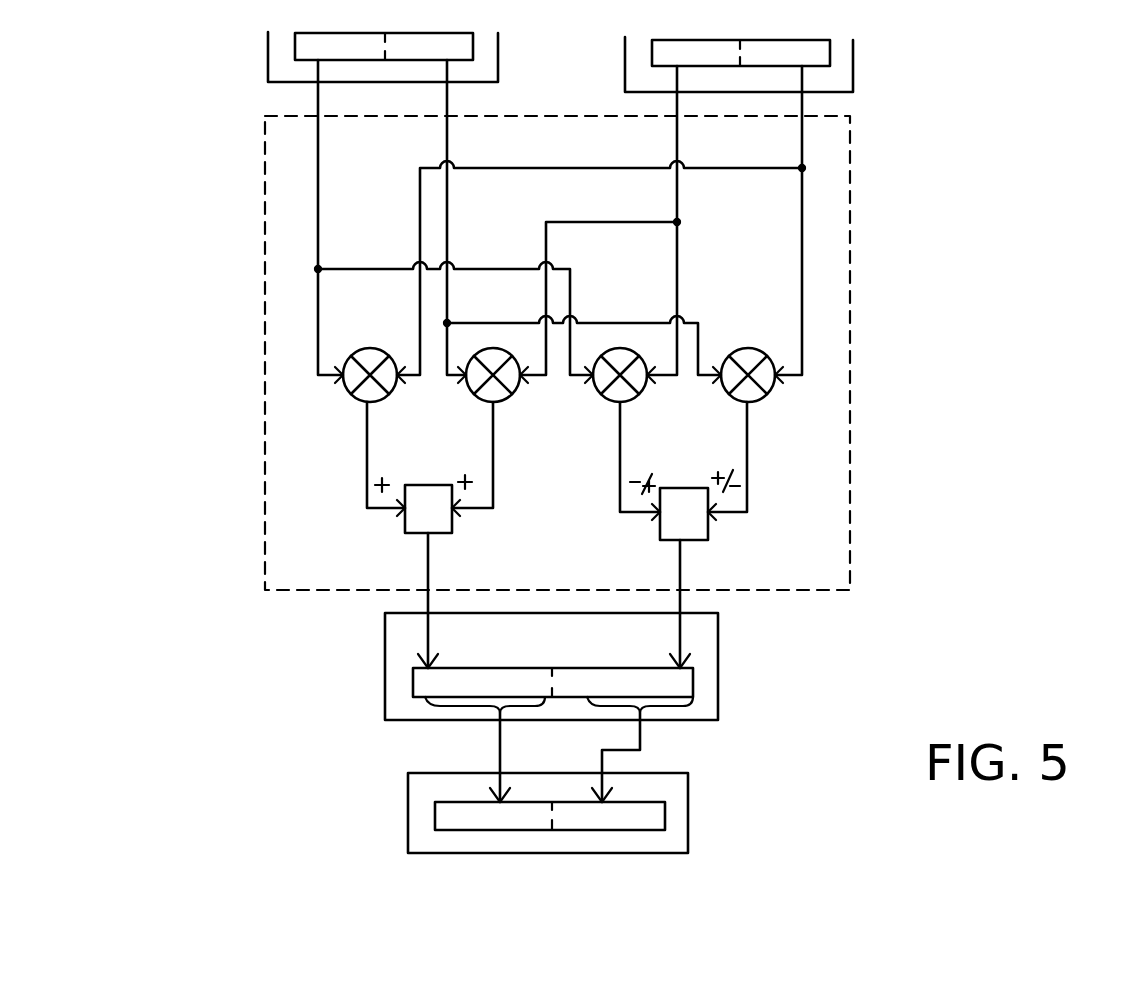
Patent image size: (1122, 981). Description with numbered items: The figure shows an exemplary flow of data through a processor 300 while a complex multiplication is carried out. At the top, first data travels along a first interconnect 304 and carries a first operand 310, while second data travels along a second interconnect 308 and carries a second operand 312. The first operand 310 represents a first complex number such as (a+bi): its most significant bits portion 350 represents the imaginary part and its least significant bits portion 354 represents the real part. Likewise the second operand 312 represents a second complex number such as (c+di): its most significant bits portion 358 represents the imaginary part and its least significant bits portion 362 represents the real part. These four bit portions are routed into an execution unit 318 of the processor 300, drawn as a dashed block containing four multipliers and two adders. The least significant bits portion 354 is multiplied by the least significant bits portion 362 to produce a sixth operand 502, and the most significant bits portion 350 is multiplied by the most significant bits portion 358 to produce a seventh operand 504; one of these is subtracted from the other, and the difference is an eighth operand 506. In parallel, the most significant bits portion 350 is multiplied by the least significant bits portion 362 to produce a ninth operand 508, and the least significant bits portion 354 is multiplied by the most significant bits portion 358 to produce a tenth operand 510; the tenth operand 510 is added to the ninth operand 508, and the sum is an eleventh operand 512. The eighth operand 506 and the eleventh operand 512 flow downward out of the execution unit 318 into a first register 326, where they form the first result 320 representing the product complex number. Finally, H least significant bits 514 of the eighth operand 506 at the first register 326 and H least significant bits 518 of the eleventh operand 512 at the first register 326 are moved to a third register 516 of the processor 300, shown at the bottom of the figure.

The processor 300 is at (200, 128).
The first interconnect 304 is at (498, 64).
The second interconnect 308 is at (853, 74).
The first operand 310 is at (443, 26).
The second operand 312 is at (798, 26).
The execution unit 318 is at (557, 353).
The first result 320 is at (566, 647).
The first register 326 is at (718, 682).
The most significant bits portion of first operand 350 is at (318, 176).
The least significant bits portion of first operand 354 is at (447, 132).
The most significant bits portion of second operand 358 is at (677, 142).
The least significant bits portion of second operand 362 is at (802, 212).
The sixth operand 502 is at (747, 436).
The seventh operand 504 is at (620, 431).
The eighth operand 506 is at (680, 560).
The ninth operand 508 is at (367, 428).
The tenth operand 510 is at (493, 428).
The eleventh operand 512 is at (428, 558).
The H least significant bits of eighth operand 514 is at (640, 741).
The third register 516 is at (688, 819).
The H least significant bits of eleventh operand 518 is at (500, 741).